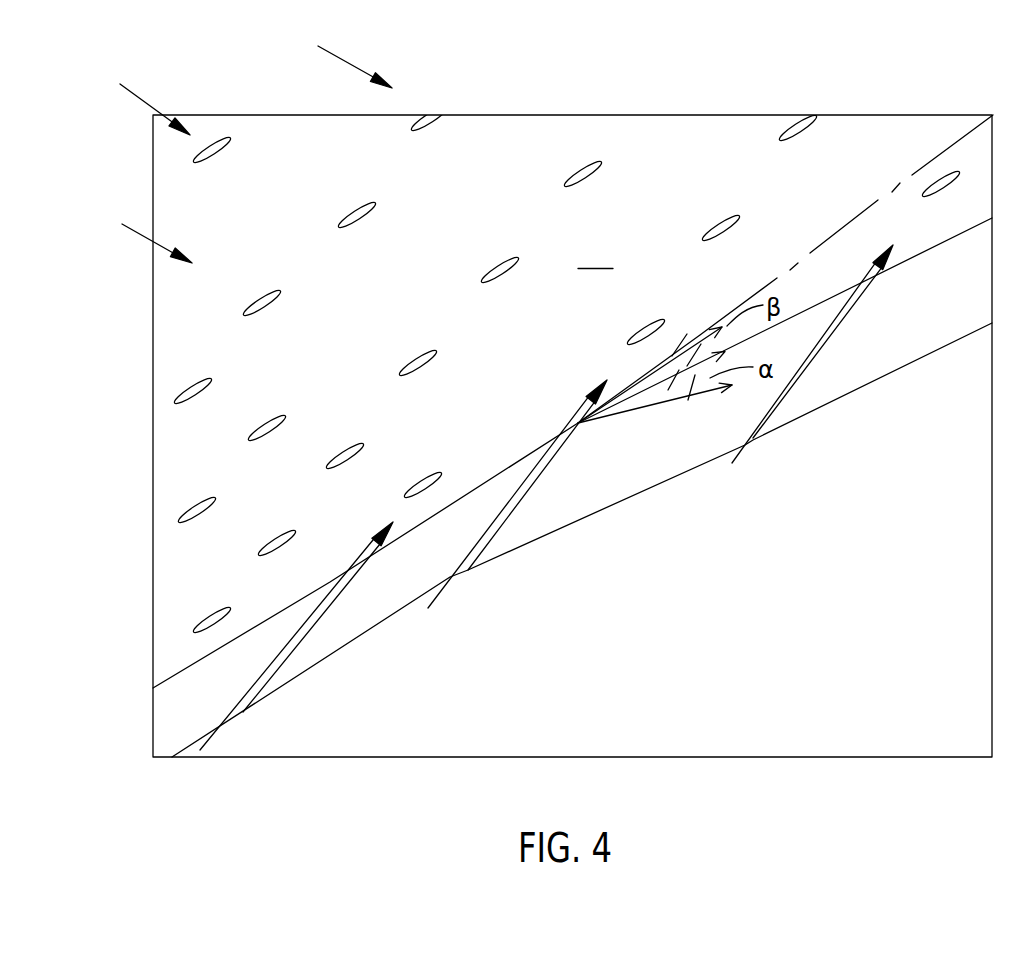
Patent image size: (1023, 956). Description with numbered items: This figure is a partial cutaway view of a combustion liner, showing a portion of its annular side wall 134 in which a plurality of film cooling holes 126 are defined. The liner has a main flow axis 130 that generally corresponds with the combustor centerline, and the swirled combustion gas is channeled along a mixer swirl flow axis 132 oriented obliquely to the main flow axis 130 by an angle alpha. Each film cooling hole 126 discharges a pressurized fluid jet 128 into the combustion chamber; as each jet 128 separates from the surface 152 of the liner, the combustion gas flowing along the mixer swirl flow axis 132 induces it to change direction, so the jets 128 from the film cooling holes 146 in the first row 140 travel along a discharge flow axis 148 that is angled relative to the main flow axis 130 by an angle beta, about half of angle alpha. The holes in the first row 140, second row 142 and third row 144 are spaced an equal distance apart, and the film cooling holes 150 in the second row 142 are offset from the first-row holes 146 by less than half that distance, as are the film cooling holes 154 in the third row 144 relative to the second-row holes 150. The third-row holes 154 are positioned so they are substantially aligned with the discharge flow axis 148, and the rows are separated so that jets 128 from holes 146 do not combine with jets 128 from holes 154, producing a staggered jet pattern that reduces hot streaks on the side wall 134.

The film cooling holes 126 is at (186, 396).
The pressurized fluid jet 128 is at (372, 545).
The main flow axis 130 is at (930, 163).
The mixer swirl flow axis 132 is at (653, 405).
The side wall 134 is at (682, 136).
The first row 140 is at (136, 236).
The second row 142 is at (134, 102).
The third row 144 is at (333, 59).
The film cooling holes in first row 146 is at (412, 358).
The discharge flow axis 148 is at (676, 392).
The film cooling holes in second row 150 is at (498, 265).
The surface 152 is at (595, 257).
The film cooling holes in third row 154 is at (717, 222).